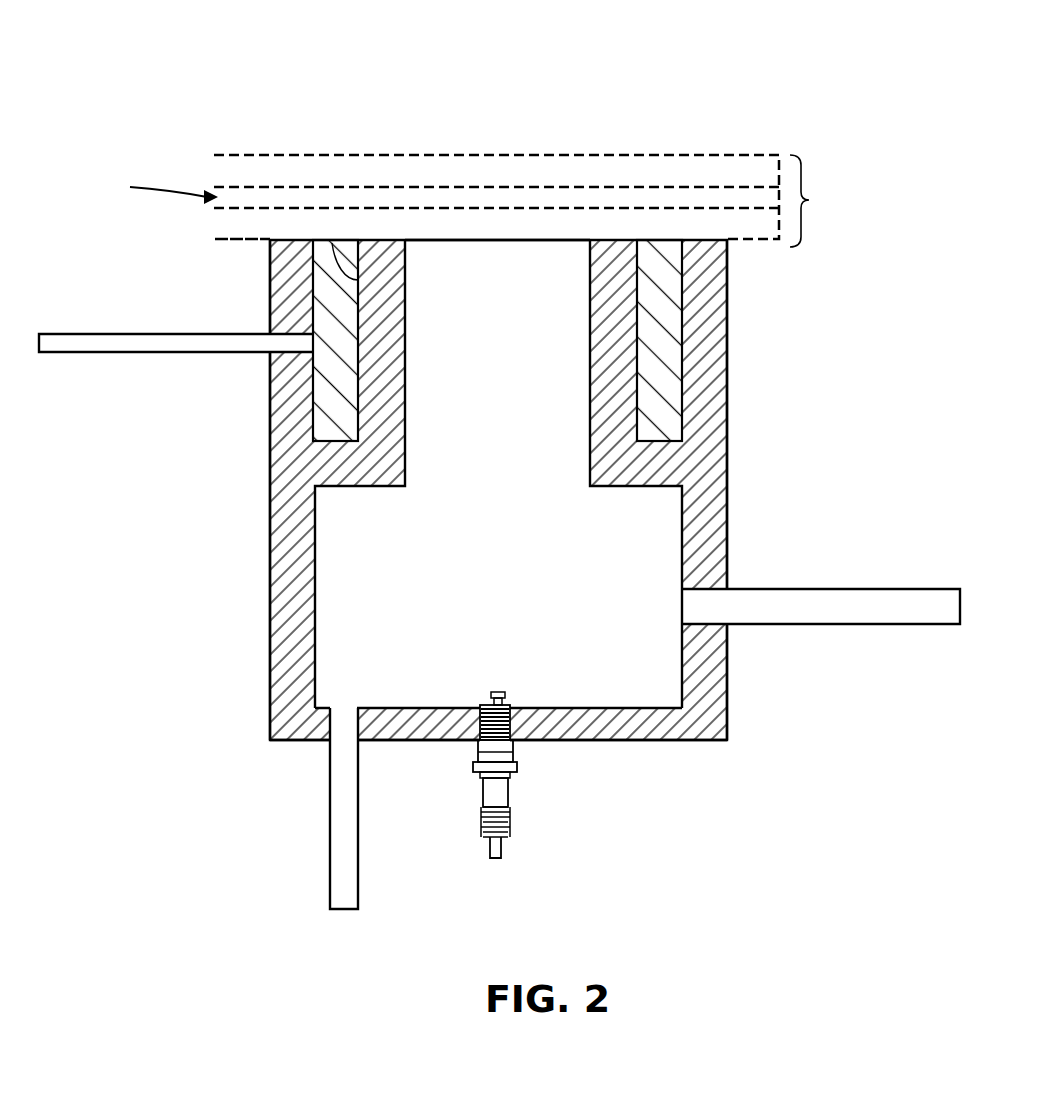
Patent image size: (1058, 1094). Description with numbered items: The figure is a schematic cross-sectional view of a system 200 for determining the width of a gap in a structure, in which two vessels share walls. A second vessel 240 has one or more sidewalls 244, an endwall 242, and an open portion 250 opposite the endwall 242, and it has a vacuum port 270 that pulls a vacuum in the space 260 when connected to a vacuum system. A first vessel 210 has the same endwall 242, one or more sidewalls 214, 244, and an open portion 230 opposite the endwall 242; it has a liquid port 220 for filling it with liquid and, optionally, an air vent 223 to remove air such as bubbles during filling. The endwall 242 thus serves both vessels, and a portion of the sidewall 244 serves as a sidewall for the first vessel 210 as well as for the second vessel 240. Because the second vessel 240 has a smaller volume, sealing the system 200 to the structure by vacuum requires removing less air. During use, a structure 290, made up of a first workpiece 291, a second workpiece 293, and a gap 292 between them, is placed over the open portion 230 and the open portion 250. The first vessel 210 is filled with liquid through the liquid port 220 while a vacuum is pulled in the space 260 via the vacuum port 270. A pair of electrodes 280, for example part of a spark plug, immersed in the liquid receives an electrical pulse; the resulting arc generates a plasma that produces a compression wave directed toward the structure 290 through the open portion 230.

The system 200 is at (534, 42).
The first vessel 210 is at (637, 262).
The sidewall 214 is at (405, 413).
The liquid port 220 is at (882, 589).
The air vent 223 is at (330, 872).
The open portion 230 is at (493, 241).
The second vessel 240 is at (727, 445).
The endwall 242 is at (405, 708).
The sidewall 244 is at (270, 608).
The open portion 250 is at (358, 280).
The space 260 is at (323, 300).
The vacuum port 270 is at (98, 333).
The pair of electrodes 280 is at (512, 697).
The structure 290 is at (529, 201).
The first workpiece 291 is at (213, 223).
The gap 292 is at (213, 172).
The second workpiece 293 is at (155, 187).